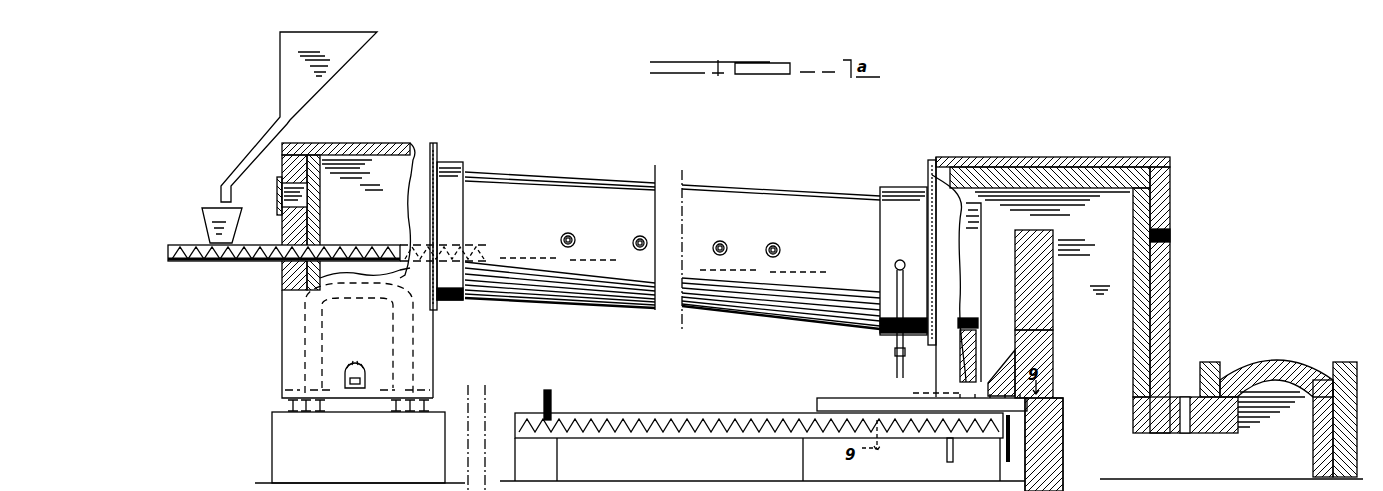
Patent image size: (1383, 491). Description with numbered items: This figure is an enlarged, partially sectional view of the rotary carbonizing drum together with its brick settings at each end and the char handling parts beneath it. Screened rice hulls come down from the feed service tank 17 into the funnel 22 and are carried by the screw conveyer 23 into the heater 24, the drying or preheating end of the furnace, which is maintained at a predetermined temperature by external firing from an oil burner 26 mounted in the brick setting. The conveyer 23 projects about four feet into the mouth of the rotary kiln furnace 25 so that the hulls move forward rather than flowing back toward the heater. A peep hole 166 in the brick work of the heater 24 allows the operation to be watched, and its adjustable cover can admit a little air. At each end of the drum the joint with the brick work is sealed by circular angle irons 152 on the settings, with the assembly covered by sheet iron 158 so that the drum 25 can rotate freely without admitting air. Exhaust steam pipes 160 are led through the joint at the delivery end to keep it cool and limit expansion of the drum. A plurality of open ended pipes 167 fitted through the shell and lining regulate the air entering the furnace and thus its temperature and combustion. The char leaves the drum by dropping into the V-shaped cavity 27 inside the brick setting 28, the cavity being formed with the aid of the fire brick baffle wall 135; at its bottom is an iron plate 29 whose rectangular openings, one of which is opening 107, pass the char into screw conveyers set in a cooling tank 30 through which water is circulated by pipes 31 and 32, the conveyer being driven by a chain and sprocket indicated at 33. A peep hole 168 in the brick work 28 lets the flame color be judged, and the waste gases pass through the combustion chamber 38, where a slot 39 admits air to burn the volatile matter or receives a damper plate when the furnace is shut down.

The feed service tank 17 is at (352, 50).
The funnel 22 is at (214, 213).
The screw conveyer 23 is at (368, 245).
The heater 24 is at (365, 143).
The peep hole 166 is at (282, 190).
The circular angle irons 152 is at (437, 150).
The sheet iron 158 is at (468, 170).
The rotary kiln furnace 25 is at (554, 183).
The pipes 167 is at (637, 238).
The oil burner 26 is at (368, 376).
The exhaust steam pipes 160 is at (895, 348).
The brick setting 28 is at (1082, 190).
The fire brick baffle wall 135 is at (1048, 252).
The V-shaped cavity 27 is at (1005, 338).
The rectangular opening 107 is at (988, 388).
The peep hole 168 is at (1172, 235).
The iron plate 29 is at (913, 393).
The cooling tanks 30 is at (684, 413).
The pipe 31 is at (553, 398).
The pipe 32 is at (947, 452).
The chain and sprocket drive 33 is at (1012, 455).
The slot 39 is at (1186, 395).
The combustion chamber 38 is at (1283, 385).